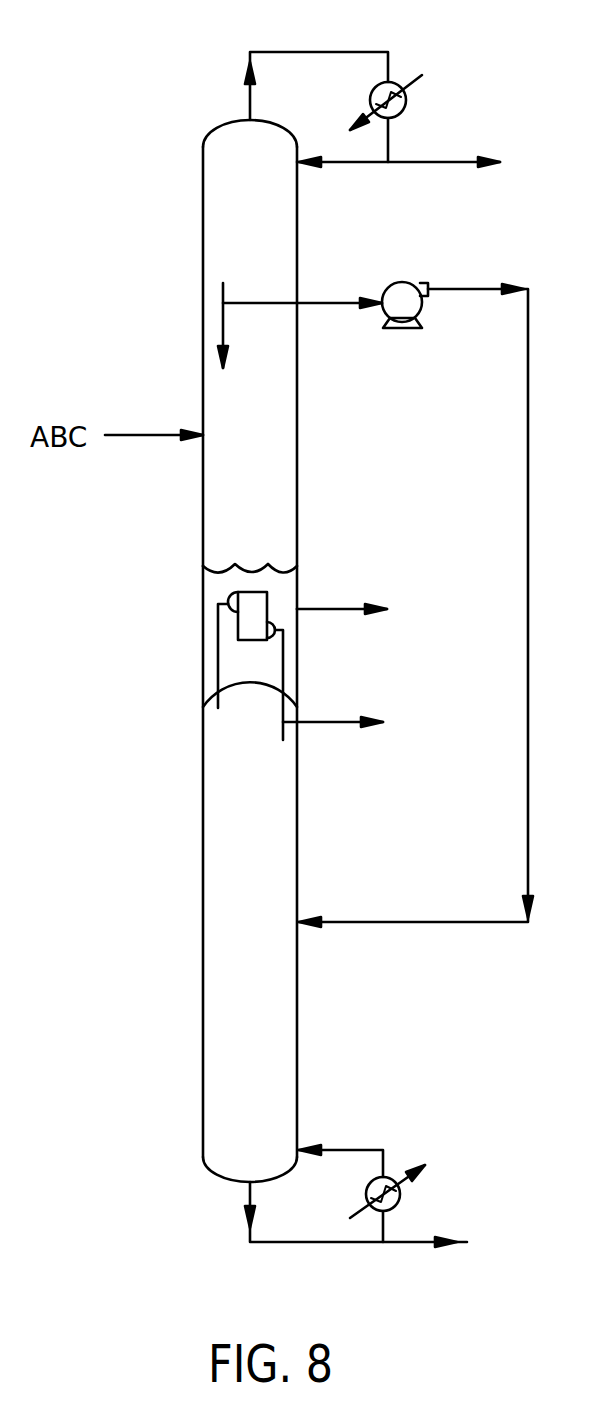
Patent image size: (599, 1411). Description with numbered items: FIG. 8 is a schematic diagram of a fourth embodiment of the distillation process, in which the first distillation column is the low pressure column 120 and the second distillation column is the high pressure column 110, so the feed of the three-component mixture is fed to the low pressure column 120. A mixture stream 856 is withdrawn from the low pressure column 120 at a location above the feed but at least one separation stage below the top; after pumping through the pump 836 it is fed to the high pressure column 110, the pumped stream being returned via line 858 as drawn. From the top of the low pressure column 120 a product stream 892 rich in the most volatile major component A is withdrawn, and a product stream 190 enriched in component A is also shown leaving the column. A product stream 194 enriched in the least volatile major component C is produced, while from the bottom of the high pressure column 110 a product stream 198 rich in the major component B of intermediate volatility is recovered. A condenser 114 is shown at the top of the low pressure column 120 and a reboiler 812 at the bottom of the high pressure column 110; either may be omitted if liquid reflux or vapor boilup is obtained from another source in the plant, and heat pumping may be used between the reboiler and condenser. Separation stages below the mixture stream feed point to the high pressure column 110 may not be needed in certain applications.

The high pressure column 110 is at (298, 1058).
The condenser 114 is at (392, 80).
The low pressure column 120 is at (203, 220).
The product stream 190 is at (333, 722).
The product stream 194 is at (333, 609).
The product stream 198 is at (410, 1242).
The reboiler 812 is at (398, 1172).
The pump 836 is at (400, 296).
The mixture stream 856 is at (320, 303).
The AB recycle return line 858 is at (460, 922).
The product stream 892 is at (432, 162).